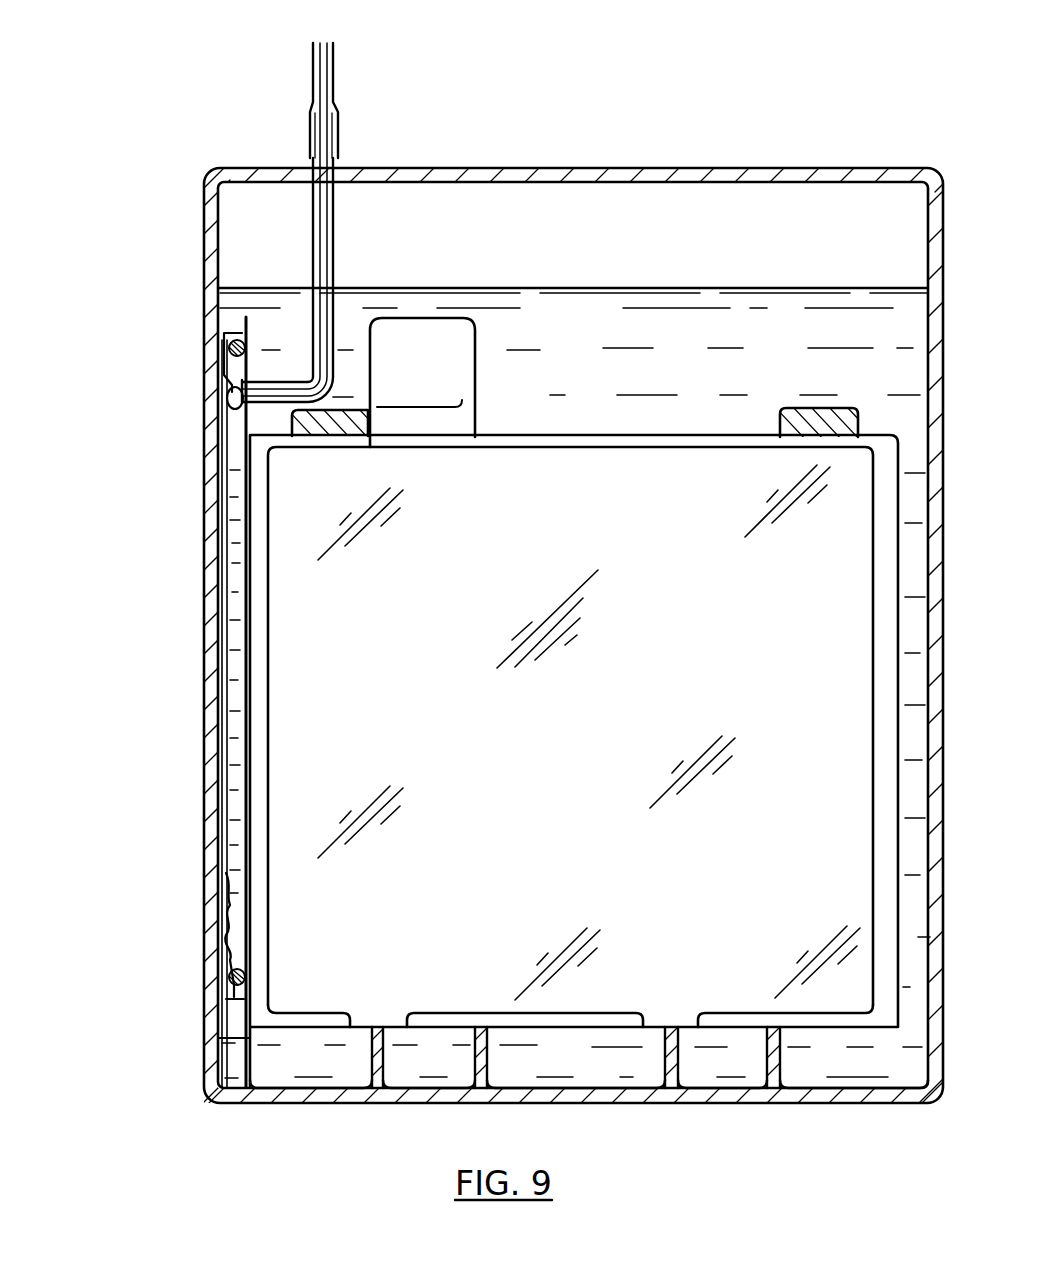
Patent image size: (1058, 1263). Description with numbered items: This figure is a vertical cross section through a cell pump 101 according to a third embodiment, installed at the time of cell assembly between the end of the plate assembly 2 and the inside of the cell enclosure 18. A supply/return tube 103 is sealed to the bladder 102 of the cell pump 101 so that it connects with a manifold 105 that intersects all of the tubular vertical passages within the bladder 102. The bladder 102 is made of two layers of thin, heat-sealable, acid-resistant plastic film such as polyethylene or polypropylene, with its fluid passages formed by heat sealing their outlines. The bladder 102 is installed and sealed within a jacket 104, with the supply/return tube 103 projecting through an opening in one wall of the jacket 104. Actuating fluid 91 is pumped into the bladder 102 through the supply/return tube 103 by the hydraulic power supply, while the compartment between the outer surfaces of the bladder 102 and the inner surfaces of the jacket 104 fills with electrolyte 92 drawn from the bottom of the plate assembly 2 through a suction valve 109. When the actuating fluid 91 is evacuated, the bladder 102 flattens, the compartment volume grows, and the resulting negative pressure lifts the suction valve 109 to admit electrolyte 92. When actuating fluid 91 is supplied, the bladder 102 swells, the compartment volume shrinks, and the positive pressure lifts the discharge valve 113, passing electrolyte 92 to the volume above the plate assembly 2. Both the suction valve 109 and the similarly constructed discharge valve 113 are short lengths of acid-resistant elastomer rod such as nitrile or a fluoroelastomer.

The cell enclosure 18 is at (487, 173).
The electrolyte 92 is at (587, 308).
The supply/return tube 103 is at (313, 230).
The cell pump 101 is at (262, 337).
The discharge valve 113 is at (237, 338).
The manifold 105 is at (227, 393).
The actuating fluid 91 is at (230, 437).
The plate assembly 2 is at (293, 595).
The bladder 102 is at (218, 932).
The suction valve 109 is at (230, 967).
The jacket 104 is at (235, 1000).